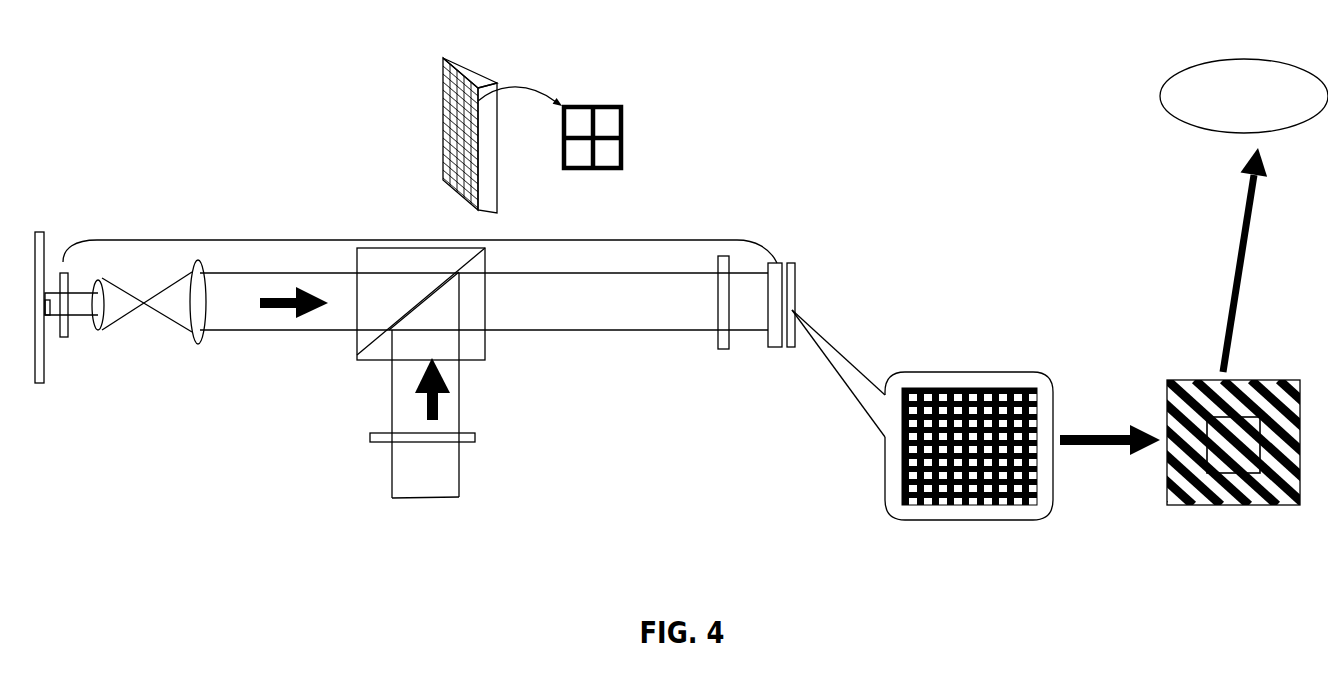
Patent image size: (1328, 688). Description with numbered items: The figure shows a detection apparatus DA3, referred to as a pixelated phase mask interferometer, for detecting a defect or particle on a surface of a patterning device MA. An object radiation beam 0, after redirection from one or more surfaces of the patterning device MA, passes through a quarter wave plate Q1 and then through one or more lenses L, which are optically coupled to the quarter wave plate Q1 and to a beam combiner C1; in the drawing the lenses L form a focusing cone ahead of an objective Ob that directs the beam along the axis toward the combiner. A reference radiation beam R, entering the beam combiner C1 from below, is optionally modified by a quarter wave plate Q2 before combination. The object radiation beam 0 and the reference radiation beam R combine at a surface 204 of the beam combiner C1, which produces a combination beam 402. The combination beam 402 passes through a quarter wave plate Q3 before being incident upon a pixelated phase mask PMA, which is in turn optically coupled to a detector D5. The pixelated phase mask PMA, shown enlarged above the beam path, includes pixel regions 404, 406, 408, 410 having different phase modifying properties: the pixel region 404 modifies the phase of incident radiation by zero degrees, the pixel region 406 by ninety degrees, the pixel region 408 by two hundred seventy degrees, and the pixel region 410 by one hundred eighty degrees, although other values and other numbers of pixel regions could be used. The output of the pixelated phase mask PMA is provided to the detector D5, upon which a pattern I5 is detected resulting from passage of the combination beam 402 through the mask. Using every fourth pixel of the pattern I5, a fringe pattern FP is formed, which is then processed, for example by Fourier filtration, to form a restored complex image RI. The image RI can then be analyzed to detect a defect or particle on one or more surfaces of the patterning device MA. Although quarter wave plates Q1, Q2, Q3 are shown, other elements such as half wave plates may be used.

The patterning device MA is at (38, 231).
The object radiation beam 0 is at (50, 298).
The quarter wave plate Q1 is at (62, 328).
The lenses L is at (100, 333).
The objective lens Ob is at (216, 302).
The detection apparatus DA3 is at (446, 298).
The beam combiner C1 is at (485, 352).
The surface 204 is at (372, 337).
The reference radiation beam R is at (425, 385).
The quarter wave plate Q2 is at (475, 437).
The pixelated phase mask PMA is at (477, 77).
The pixel region 404 is at (580, 110).
The pixel region 406 is at (605, 124).
The pixel region 410 is at (568, 148).
The pixel region 408 is at (603, 160).
The combination beam 402 is at (592, 303).
The quarter wave plate Q3 is at (720, 337).
The detector D5 is at (792, 285).
The pattern I5 is at (977, 507).
The fringe pattern FP is at (1223, 505).
The restored complex image RI is at (1244, 96).